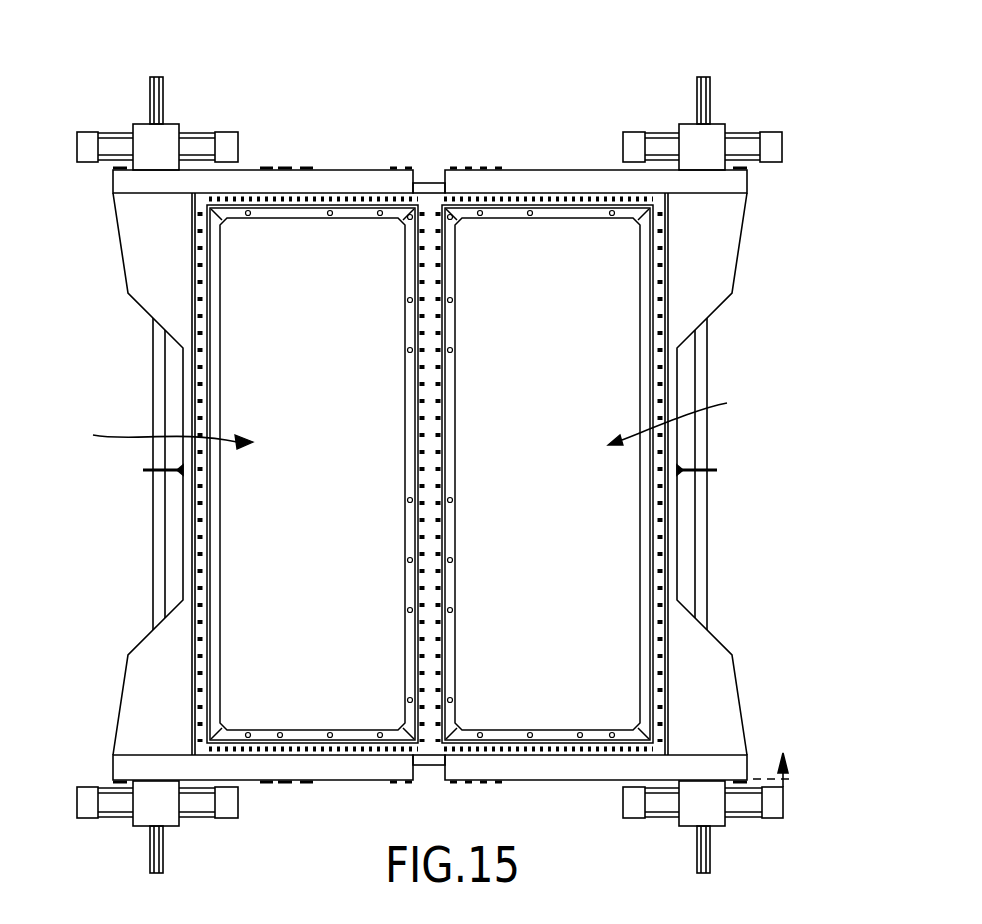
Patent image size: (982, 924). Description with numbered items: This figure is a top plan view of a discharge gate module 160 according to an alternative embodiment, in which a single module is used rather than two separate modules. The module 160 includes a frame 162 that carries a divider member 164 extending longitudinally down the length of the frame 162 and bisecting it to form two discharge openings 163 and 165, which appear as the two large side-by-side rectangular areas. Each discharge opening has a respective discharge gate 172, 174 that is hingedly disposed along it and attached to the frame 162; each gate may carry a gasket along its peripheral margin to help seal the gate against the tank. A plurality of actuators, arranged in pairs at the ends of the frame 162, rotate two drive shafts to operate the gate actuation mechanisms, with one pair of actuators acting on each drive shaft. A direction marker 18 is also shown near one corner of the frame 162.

The discharge gate module 160 is at (590, 55).
The frame 162 is at (738, 245).
The discharge opening 163 is at (159, 439).
The divider member 164 is at (430, 217).
The discharge opening 165 is at (682, 417).
The discharge gate 172 is at (243, 532).
The discharge gate 174 is at (613, 524).
The direction arrow 18 is at (786, 773).